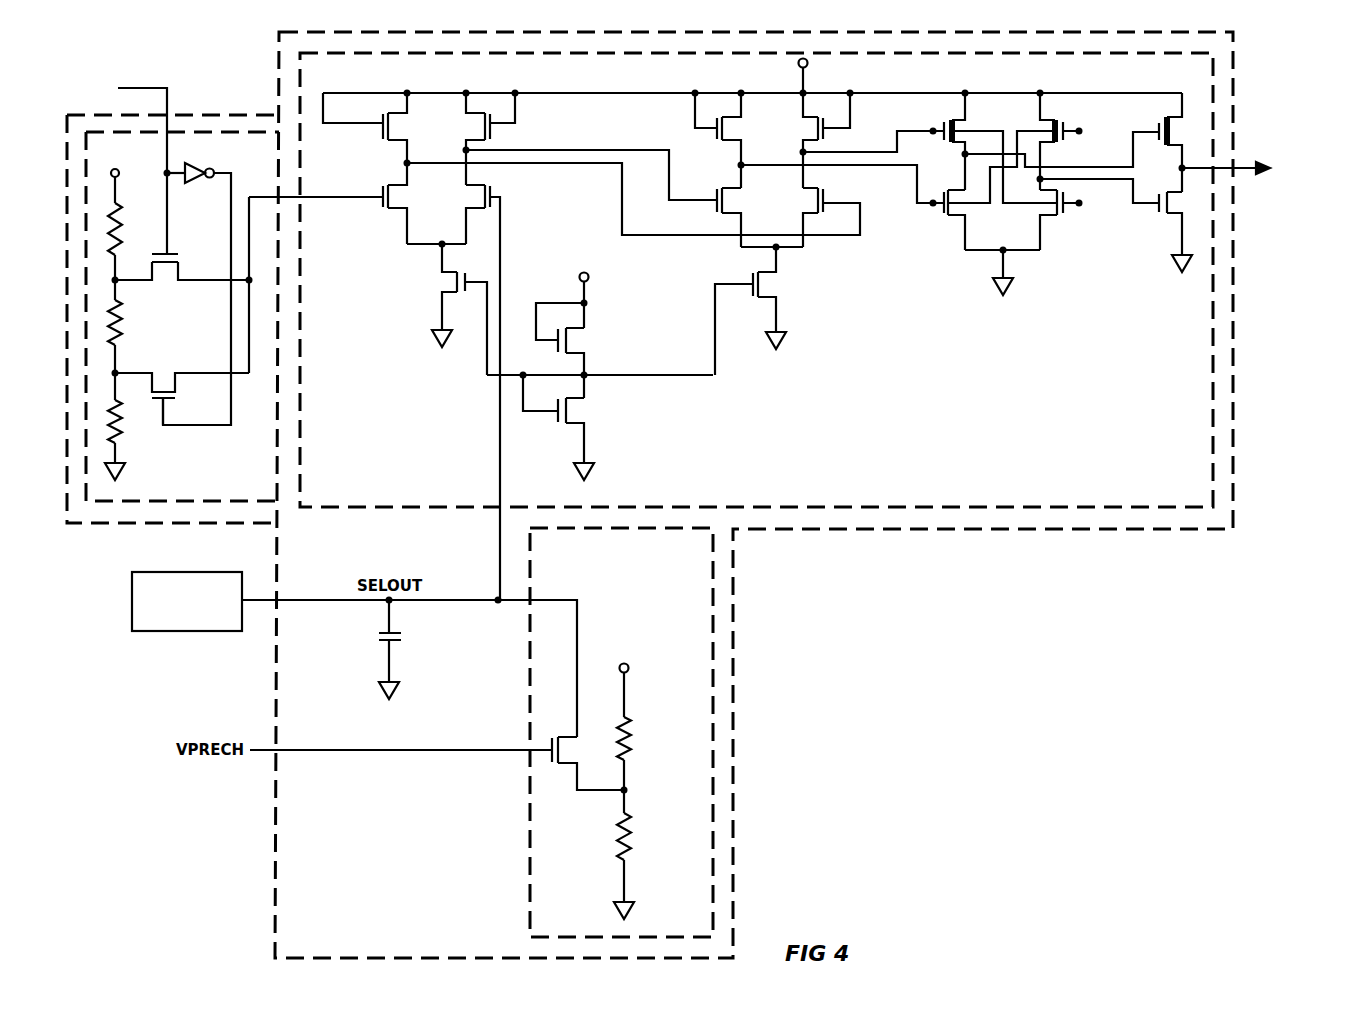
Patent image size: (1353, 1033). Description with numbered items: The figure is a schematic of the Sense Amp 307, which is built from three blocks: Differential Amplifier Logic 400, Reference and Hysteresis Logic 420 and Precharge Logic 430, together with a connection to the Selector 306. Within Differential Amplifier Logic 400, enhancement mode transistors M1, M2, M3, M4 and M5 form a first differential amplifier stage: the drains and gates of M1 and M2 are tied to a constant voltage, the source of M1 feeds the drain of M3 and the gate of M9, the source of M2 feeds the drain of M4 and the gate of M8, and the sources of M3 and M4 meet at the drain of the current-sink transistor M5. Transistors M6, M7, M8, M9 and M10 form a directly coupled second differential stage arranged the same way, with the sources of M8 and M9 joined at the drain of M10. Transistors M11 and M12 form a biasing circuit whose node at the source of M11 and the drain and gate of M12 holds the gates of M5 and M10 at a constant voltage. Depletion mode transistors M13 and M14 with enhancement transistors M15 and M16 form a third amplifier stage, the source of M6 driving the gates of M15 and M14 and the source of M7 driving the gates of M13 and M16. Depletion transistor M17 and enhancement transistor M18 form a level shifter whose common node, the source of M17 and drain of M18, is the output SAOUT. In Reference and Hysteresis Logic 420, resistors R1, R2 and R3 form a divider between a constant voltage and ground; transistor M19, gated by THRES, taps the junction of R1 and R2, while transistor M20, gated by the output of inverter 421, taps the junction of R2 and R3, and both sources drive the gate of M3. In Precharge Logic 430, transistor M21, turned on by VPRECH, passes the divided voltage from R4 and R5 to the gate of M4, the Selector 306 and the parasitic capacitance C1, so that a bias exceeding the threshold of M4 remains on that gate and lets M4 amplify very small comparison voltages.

The sense amp 307 is at (1010, 530).
The differential amplifier logic 400 is at (441, 511).
The reference and hysteresis logic 420 is at (223, 503).
The inverter 421 is at (187, 163).
The selector 306 is at (222, 572).
The precharge logic 430 is at (530, 803).
The enhancement mode MOSFET transistor M1 is at (408, 124).
The enhancement mode MOSFET transistor M2 is at (458, 123).
The enhancement mode MOSFET transistor M3 is at (402, 178).
The enhancement mode MOSFET transistor M4 is at (476, 184).
The enhancement mode MOSFET transistor M5 is at (456, 281).
The enhancement mode MOSFET transistor M6 is at (730, 121).
The enhancement mode MOSFET transistor M7 is at (820, 130).
The enhancement mode MOSFET transistor M8 is at (730, 199).
The enhancement mode MOSFET transistor M9 is at (813, 204).
The enhancement mode MOSFET transistor M10 is at (767, 286).
The enhancement mode MOSFET transistor M11 is at (580, 347).
The enhancement mode MOSFET transistor M12 is at (580, 412).
The depletion mode MOSFET transistor M13 is at (962, 117).
The depletion mode MOSFET transistor M14 is at (1050, 117).
The enhancement mode MOSFET transistor M15 is at (937, 214).
The enhancement mode MOSFET transistor M16 is at (1043, 218).
The depletion mode MOSFET transistor M17 is at (1177, 117).
The enhancement mode MOSFET transistor M18 is at (1180, 218).
The enhancement mode MOSFET transistor M19 is at (179, 268).
The enhancement mode MOSFET transistor M20 is at (180, 386).
The enhancement mode MOSFET transistor M21 is at (567, 766).
The resistor R1 is at (128, 218).
The resistor R2 is at (128, 322).
The resistor R3 is at (128, 425).
The resistor R4 is at (630, 744).
The resistor R5 is at (630, 845).
The capacitance C1 is at (400, 635).